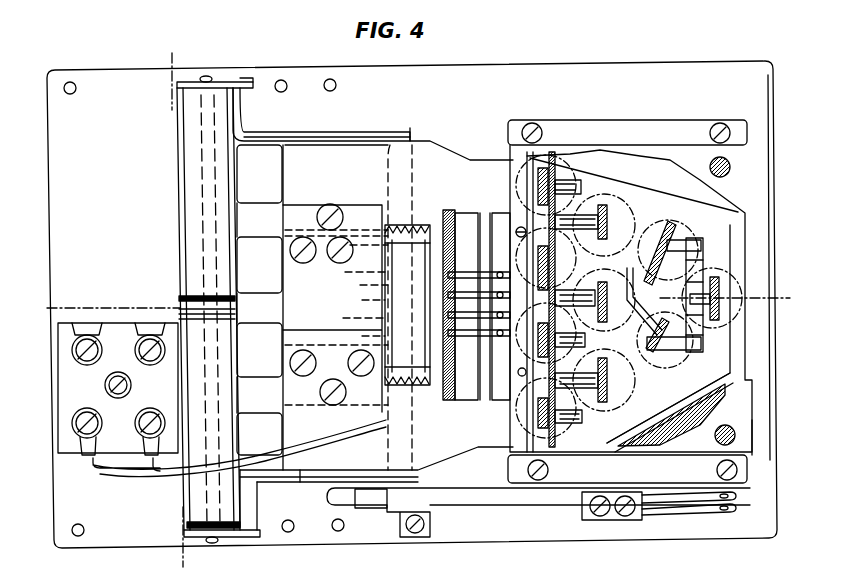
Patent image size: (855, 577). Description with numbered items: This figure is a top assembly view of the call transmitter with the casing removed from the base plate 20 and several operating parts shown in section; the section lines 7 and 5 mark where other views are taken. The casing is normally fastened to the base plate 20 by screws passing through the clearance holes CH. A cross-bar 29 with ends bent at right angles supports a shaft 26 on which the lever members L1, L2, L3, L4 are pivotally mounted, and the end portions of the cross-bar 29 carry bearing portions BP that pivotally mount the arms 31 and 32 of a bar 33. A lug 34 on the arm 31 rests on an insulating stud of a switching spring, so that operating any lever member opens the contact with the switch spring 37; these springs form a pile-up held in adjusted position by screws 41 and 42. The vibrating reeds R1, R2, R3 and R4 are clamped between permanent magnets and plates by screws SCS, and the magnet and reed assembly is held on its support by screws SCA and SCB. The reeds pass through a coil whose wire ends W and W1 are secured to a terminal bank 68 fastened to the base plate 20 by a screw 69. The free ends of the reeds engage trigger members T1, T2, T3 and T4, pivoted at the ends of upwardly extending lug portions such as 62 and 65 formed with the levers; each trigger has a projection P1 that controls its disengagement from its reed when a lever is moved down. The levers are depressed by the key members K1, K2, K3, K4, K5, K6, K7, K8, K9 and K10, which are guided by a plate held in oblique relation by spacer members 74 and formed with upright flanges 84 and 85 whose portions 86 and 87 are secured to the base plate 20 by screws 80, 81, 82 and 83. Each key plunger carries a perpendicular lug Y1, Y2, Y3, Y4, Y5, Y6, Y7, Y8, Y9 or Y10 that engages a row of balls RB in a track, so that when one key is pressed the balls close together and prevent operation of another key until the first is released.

The base plate 20 is at (720, 539).
The clearance holes CH is at (74, 83).
The section line 7 is at (165, 56).
The section line 5 is at (43, 308).
The shaft 26 is at (209, 78).
The bearing portions BP is at (221, 541).
The arm 32 is at (301, 132).
The bar 33 is at (410, 136).
The cross-bar 29 is at (186, 491).
The arm 31 is at (306, 484).
The lever member L4 is at (259, 174).
The lever member L3 is at (259, 265).
The lever member L2 is at (259, 350).
The lever member L1 is at (259, 434).
The screw SCA is at (333, 206).
The screws SCS is at (306, 237).
The screw SCB is at (338, 406).
The vibrating reed R4 is at (353, 273).
The vibrating reed R3 is at (362, 301).
The vibrating reed R2 is at (352, 317).
The vibrating reed R1 is at (362, 335).
The lug portion 65 is at (466, 306).
The lug portion 62 is at (465, 366).
The projection P1 is at (501, 306).
The trigger member T4 is at (448, 275).
The trigger member T3 is at (448, 295).
The trigger member T2 is at (448, 316).
The trigger member T1 is at (448, 334).
The securing portion 86 is at (597, 121).
The upright flange 84 is at (633, 144).
The screw 82 is at (543, 134).
The screw 83 is at (719, 123).
The spacer members 74 is at (731, 166).
The screw 80 is at (549, 471).
The screw 81 is at (716, 471).
The upright flange 85 is at (752, 462).
The key member K4 is at (538, 186).
The lug portion Y4 is at (573, 188).
The lug portion Y7 is at (588, 221).
The key member K7 is at (592, 244).
The key member K3 is at (546, 256).
The lug portion Y3 is at (547, 296).
The lug portion Y6 is at (598, 318).
The key member K6 is at (636, 315).
The key member K2 is at (538, 372).
The lug portion Y2 is at (562, 347).
The lug portion Y5 is at (603, 402).
The key member K5 is at (616, 386).
The key member K1 is at (536, 448).
The lug portion Y1 is at (569, 425).
The key member K9 is at (666, 234).
The lug portion Y9 is at (680, 245).
The lug portion Y10 is at (716, 296).
The key member K10 is at (722, 300).
The key member K8 is at (659, 356).
The lug portion Y8 is at (690, 352).
The row of balls RB is at (670, 412).
The switch spring 37 is at (538, 512).
The lug 34 is at (371, 498).
The screw 41 is at (596, 517).
The screw 42 is at (631, 517).
The securing portion 87 is at (738, 484).
The terminal bank 68 is at (118, 389).
The screw 69 is at (131, 386).
The coil wire end W is at (112, 471).
The coil wire end W1 is at (158, 473).